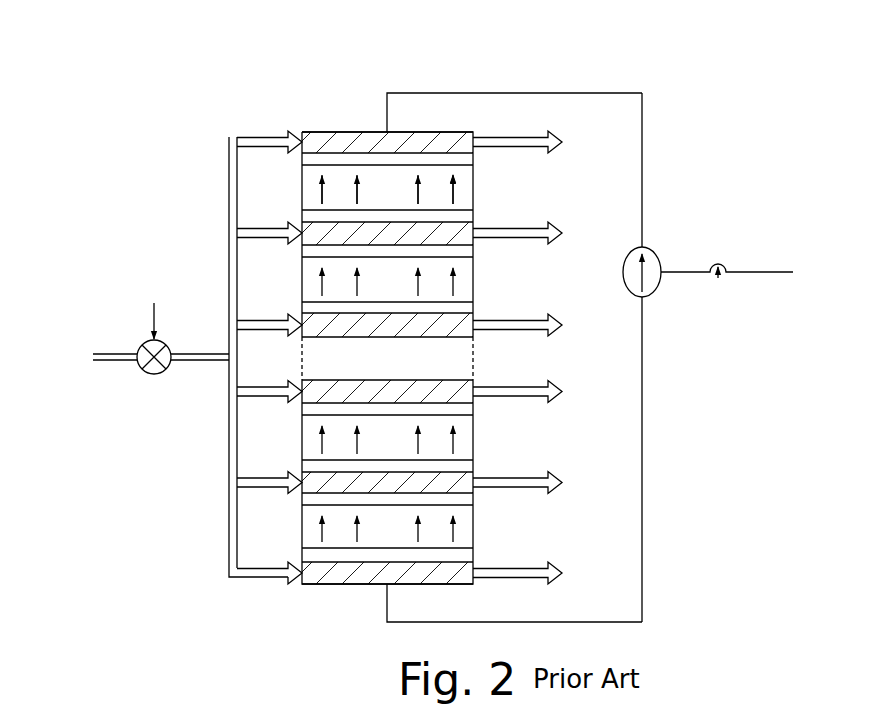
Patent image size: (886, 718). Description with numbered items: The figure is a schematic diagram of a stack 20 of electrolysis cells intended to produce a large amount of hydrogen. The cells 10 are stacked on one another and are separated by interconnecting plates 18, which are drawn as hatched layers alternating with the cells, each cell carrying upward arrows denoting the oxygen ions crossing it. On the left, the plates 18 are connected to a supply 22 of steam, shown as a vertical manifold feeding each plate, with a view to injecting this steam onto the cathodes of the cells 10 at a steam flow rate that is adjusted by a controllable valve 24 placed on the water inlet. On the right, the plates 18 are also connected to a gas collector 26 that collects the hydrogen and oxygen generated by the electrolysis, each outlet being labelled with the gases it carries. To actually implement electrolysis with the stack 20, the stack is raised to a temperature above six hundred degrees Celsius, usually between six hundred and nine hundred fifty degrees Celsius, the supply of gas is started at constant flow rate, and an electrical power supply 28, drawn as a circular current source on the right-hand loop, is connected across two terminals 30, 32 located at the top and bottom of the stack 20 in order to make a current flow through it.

The electrolysis cell 10 is at (479, 180).
The interconnecting plate 18 is at (440, 138).
The stack 20 is at (249, 109).
The supply of steam 22 is at (208, 472).
The controllable valve 24 is at (157, 375).
The gas collector 26 is at (503, 137).
The electrical power supply 28 is at (657, 285).
The terminal 30 is at (385, 130).
The terminal 32 is at (386, 586).